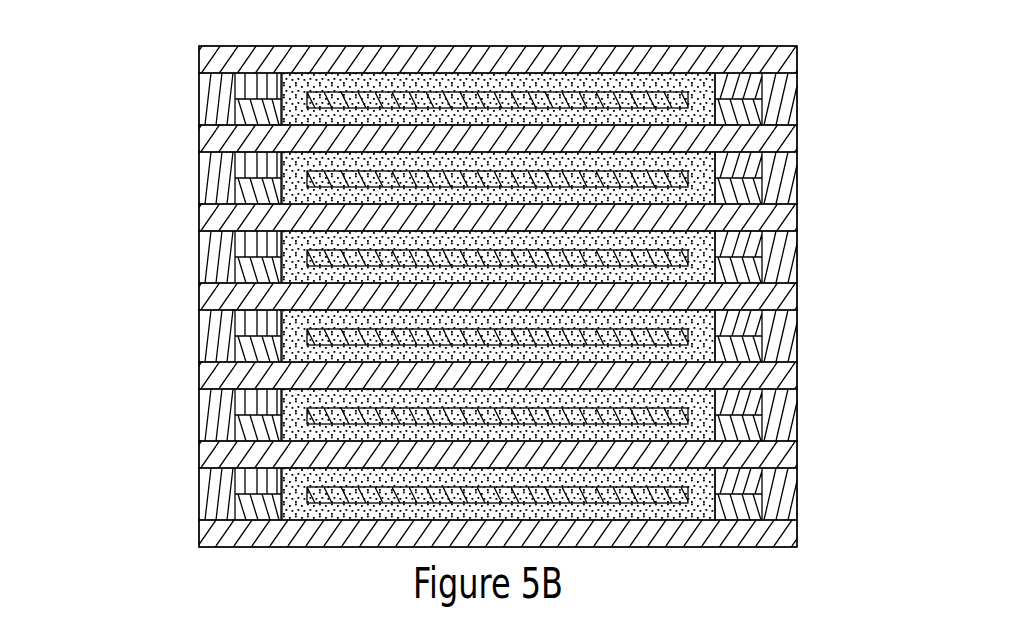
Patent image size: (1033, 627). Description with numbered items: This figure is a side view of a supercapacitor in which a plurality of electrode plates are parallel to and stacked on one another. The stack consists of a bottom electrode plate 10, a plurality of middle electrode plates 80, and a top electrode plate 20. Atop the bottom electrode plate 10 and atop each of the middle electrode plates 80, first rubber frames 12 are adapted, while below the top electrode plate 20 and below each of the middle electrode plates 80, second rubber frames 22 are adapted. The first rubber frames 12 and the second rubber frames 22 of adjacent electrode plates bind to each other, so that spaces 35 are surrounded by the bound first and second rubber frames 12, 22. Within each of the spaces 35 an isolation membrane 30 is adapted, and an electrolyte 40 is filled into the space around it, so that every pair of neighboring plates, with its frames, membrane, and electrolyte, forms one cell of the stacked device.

The bottom electrode plate 10 is at (750, 528).
The top electrode plate 20 is at (742, 67).
The middle electrode plates 80 is at (755, 137).
The isolation membrane 30 is at (235, 88).
The first rubber frames 12 is at (243, 117).
The second rubber frames 22 is at (308, 103).
The electrolyte 40 is at (715, 88).
The spaces 35 is at (718, 120).